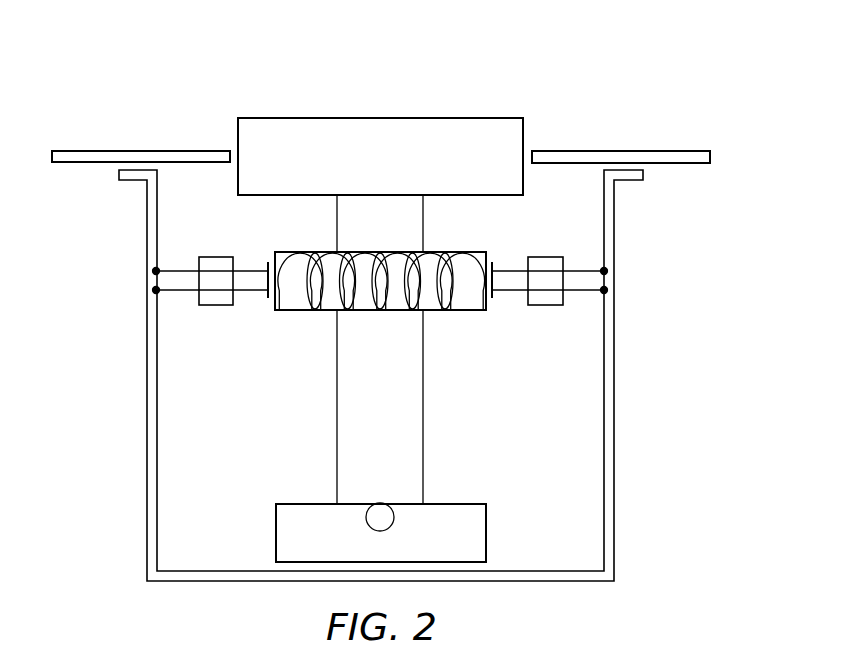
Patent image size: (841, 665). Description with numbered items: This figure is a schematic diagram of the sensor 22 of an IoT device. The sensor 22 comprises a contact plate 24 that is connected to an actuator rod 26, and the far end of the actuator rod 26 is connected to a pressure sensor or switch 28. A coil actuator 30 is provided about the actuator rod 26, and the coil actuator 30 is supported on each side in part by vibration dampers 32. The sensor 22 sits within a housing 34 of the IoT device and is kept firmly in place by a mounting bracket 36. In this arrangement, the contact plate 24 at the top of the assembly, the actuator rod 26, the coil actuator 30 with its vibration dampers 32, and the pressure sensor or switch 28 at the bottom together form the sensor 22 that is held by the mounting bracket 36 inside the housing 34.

The sensor 22 is at (485, 62).
The contact plate 24 is at (253, 118).
The actuator rod 26 is at (423, 447).
The pressure sensor or switch 28 is at (486, 513).
The coil actuator 30 is at (468, 312).
The vibration dampers 32 is at (217, 306).
The housing 34 is at (618, 151).
The mounting bracket 36 is at (147, 416).